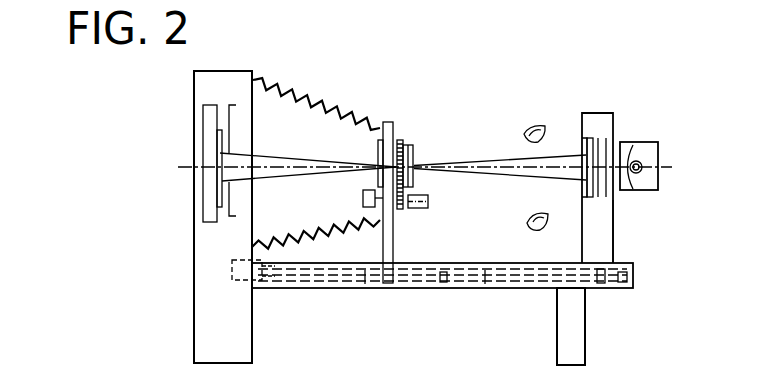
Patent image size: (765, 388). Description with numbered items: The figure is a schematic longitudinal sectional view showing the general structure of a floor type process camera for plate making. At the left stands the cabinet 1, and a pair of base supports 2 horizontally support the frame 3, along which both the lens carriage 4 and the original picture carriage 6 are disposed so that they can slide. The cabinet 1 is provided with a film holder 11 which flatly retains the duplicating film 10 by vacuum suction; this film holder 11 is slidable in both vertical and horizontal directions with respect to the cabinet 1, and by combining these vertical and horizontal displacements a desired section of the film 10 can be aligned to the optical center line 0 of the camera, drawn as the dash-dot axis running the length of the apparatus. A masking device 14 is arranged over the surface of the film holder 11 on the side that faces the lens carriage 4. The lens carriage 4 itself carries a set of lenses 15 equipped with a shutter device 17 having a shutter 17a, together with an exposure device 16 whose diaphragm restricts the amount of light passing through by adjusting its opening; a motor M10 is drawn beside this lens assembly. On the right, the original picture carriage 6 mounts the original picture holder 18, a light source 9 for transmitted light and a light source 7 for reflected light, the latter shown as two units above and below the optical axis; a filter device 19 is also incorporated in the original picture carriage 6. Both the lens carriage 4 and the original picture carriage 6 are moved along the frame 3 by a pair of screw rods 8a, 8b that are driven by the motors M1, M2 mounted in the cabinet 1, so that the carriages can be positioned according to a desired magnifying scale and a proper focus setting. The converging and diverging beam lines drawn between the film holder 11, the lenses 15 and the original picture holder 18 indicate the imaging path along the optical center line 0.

The optical center line 0 is at (272, 173).
The cabinet 1 is at (252, 306).
The base supports 2 is at (557, 313).
The frame 3 is at (425, 288).
The lens carriage 4 is at (388, 122).
The original picture carriage 6 is at (613, 237).
The light source for reflected light 7 is at (524, 120).
The screw rod 8a is at (365, 284).
The screw rod 8b is at (485, 284).
The light source for transmitted light 9 is at (638, 142).
The duplicating film 10 is at (210, 130).
The film holder 11 is at (214, 148).
The masking device 14 is at (236, 216).
The set of lenses 15 is at (412, 150).
The exposure device 16 is at (402, 209).
The shutter device 17 is at (363, 198).
The shutter 17a is at (378, 149).
The original picture holder 18 is at (587, 140).
The filter device 19 is at (600, 113).
The motor M1 is at (197, 272).
The motor M2 is at (232, 270).
The motor M10 is at (428, 202).